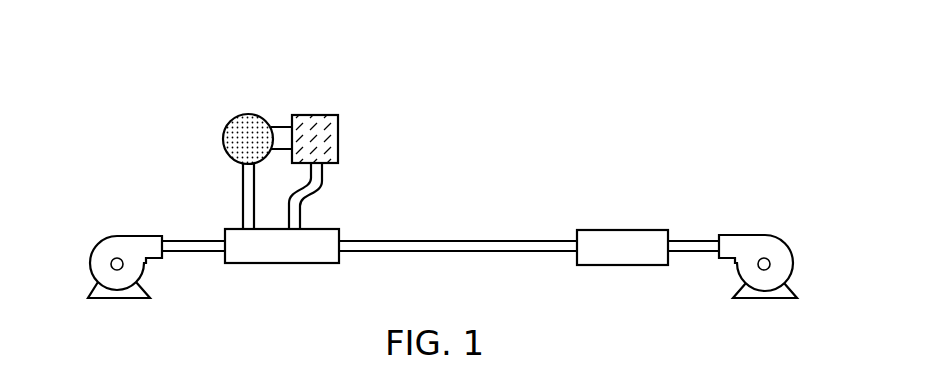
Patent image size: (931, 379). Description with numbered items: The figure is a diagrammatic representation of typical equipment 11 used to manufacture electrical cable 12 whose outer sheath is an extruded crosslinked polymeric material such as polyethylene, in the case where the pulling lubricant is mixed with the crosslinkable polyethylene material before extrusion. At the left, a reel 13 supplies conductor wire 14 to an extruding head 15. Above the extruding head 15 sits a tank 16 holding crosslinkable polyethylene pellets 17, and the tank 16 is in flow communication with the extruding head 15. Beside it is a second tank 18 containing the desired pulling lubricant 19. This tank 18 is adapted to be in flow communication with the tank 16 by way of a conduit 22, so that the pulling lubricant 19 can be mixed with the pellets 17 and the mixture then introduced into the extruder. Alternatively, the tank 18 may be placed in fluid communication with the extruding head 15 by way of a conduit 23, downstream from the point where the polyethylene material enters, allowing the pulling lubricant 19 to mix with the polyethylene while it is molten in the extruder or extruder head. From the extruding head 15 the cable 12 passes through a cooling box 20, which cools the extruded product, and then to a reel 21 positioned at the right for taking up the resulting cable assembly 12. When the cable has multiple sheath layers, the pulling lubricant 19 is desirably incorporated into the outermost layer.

The equipment 11 is at (473, 122).
The electrical cable 12 is at (440, 239).
The reel 13 is at (118, 234).
The conductor wire 14 is at (188, 238).
The extruding head 15 is at (260, 264).
The tank 16 is at (222, 138).
The crosslinkable polyethylene pellets 17 is at (242, 120).
The tank 18 is at (316, 115).
The pulling lubricant 19 is at (338, 140).
The cooling box 20 is at (623, 230).
The reel 21 is at (758, 235).
The conduit 22 is at (280, 126).
The conduit 23 is at (323, 175).